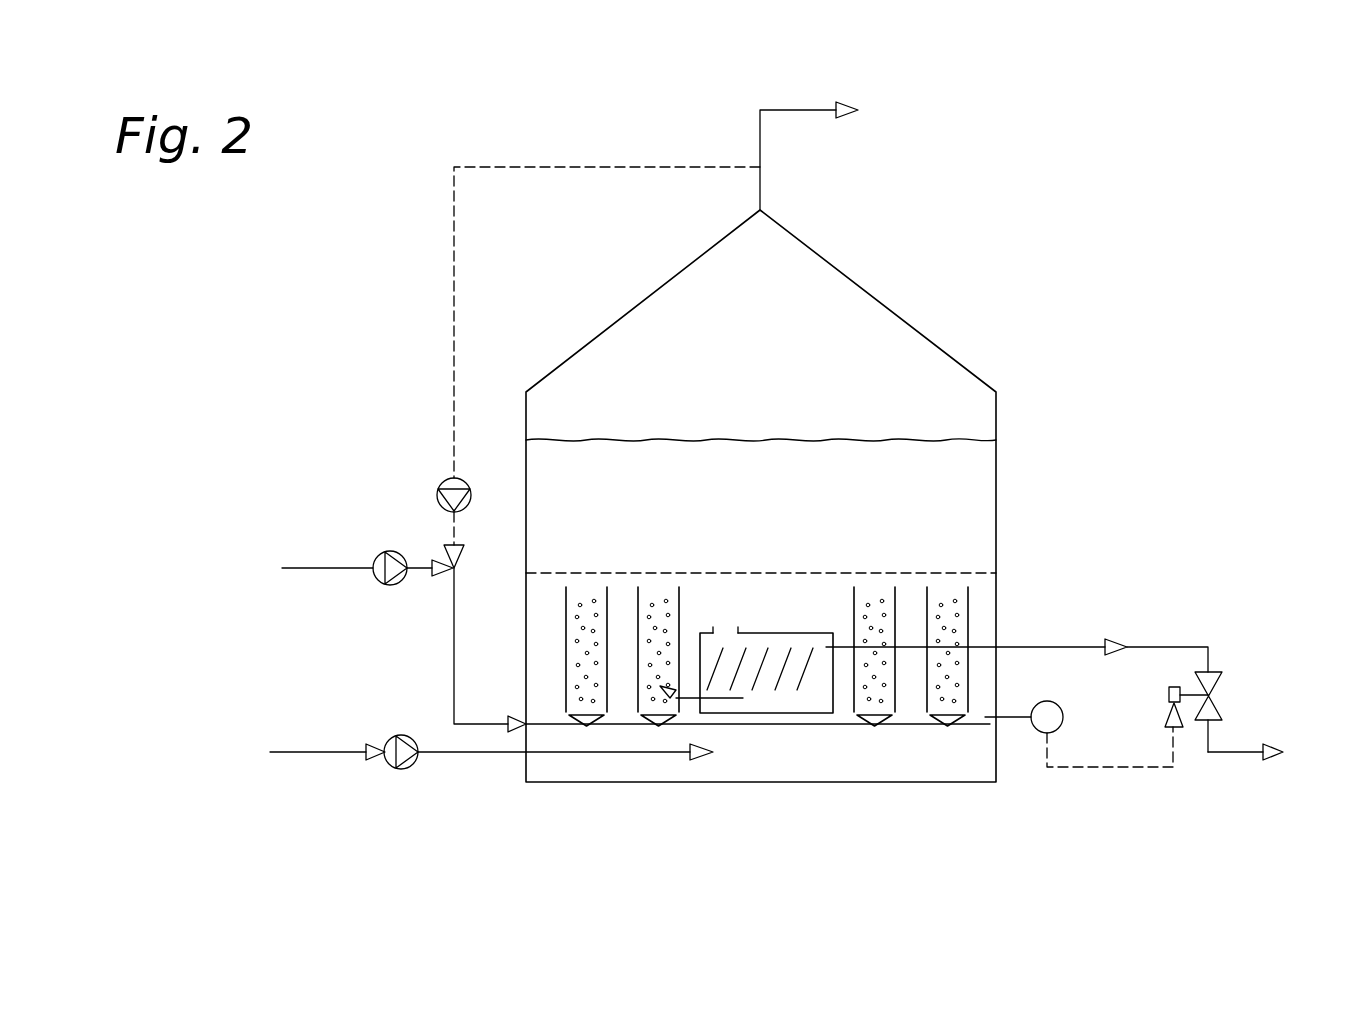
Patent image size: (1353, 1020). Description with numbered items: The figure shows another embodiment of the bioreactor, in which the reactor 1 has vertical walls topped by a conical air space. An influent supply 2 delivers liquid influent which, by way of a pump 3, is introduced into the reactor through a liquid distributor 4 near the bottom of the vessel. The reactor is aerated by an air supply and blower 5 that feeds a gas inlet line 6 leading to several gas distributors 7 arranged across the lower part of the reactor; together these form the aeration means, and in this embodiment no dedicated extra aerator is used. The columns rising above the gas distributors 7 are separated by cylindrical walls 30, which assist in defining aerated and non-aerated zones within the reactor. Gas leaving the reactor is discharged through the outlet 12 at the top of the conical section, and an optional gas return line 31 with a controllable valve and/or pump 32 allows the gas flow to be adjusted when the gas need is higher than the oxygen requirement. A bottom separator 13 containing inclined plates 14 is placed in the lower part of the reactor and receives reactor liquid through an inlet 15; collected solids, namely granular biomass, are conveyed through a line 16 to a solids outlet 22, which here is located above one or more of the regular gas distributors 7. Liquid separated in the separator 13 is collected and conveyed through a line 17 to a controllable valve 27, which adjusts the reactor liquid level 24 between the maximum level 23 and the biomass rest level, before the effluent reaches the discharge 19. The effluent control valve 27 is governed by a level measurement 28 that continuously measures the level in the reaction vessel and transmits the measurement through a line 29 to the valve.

The reactor 1 is at (540, 467).
The influent supply 2 is at (330, 752).
The pump 3 is at (402, 769).
The liquid distributor 4 is at (632, 756).
The air supply and blower 5 is at (377, 566).
The gas inlet line 6 is at (453, 621).
The gas distributors 7 is at (583, 728).
The outlet 12 is at (805, 109).
The bottom separator 13 is at (790, 633).
The inclined plates 14 is at (785, 690).
The inlet 15 is at (726, 633).
The line 16 is at (715, 713).
The line 17 is at (1033, 647).
The discharge 19 is at (1238, 752).
The solids outlet 22 is at (677, 699).
The maximum level 23 is at (777, 440).
The reactor liquid level 24 is at (873, 573).
The controllable valve 27 is at (1212, 678).
The level measurement 28 is at (1063, 712).
The line 29 is at (1125, 767).
The cylindrical walls 30 is at (607, 611).
The gas return line 31 is at (591, 167).
The controllable valve and/or pump 32 is at (443, 483).